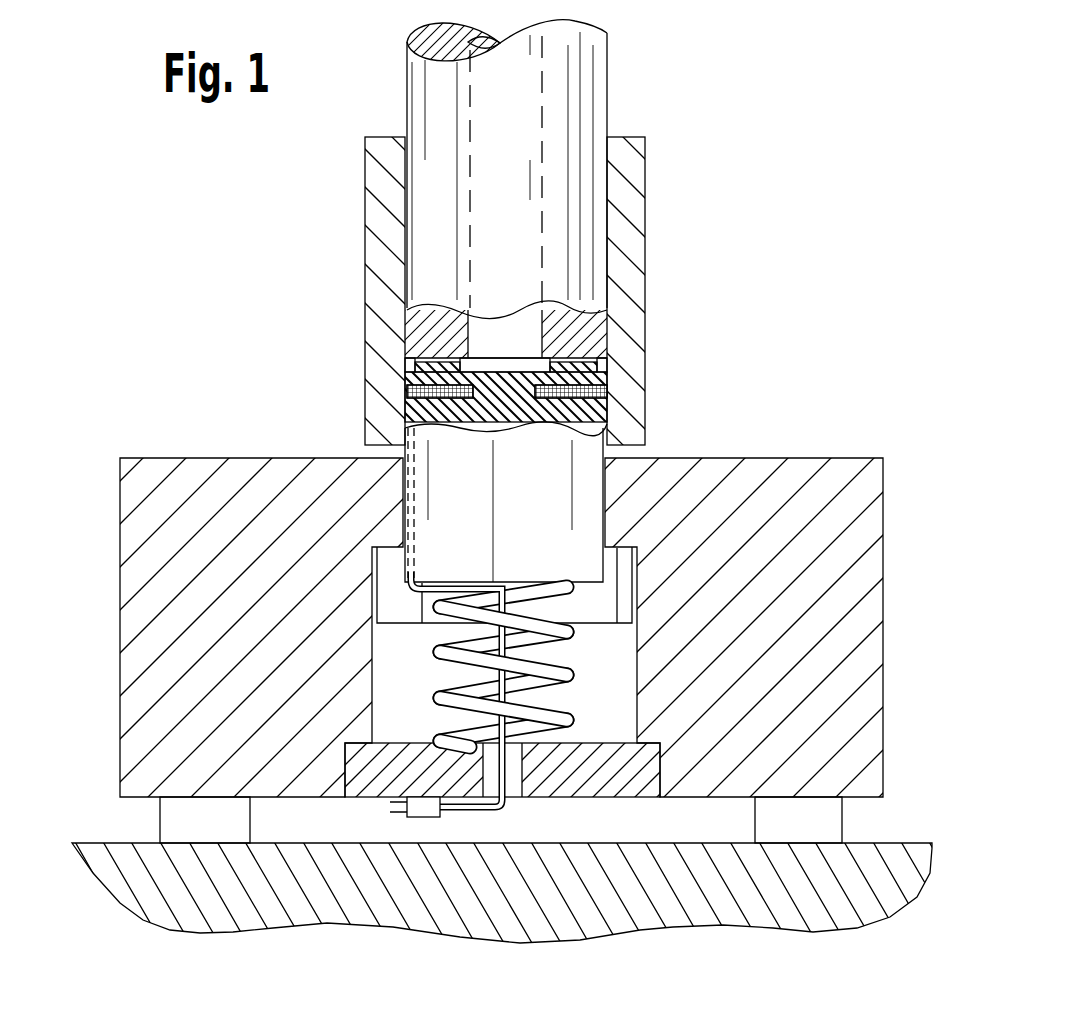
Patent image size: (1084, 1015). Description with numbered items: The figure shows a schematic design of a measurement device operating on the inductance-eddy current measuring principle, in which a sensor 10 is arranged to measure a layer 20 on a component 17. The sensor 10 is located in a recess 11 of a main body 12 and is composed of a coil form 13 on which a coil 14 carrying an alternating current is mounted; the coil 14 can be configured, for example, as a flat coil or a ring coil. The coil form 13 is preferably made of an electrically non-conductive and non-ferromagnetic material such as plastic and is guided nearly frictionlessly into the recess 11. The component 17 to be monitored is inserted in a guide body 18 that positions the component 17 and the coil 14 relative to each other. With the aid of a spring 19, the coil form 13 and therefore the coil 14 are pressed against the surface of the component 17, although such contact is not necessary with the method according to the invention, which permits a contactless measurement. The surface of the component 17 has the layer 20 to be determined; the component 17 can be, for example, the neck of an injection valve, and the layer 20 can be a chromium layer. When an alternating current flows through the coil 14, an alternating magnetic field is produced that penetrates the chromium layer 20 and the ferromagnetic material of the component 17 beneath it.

The sensor 10 is at (320, 413).
The recess 11 is at (606, 720).
The main body 12 is at (790, 515).
The coil form 13 is at (603, 452).
The coil 14 is at (603, 390).
The component 17 is at (567, 83).
The guide body 18 is at (633, 173).
The spring 19 is at (437, 693).
The layer 20 is at (603, 340).